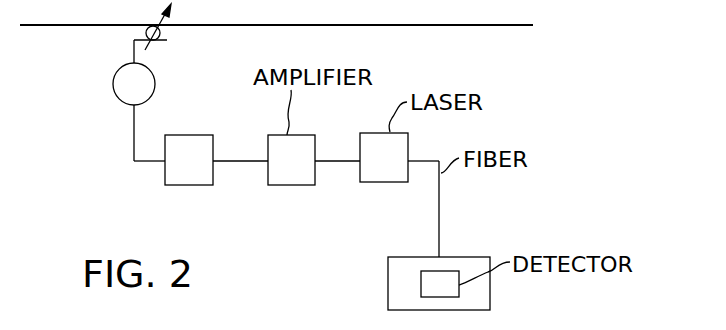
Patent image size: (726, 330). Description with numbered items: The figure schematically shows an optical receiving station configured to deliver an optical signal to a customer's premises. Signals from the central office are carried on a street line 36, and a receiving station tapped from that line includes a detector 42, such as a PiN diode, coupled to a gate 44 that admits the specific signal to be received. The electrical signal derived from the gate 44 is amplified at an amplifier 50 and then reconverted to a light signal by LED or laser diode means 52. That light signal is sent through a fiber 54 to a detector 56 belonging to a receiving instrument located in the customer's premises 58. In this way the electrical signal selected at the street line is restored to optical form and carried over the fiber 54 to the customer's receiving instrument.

The street line 36 is at (352, 24).
The detector 42 is at (114, 78).
The gate 44 is at (189, 160).
The amplifier 50 is at (291, 160).
The LED or laser diode means 52 is at (384, 157).
The fiber 54 is at (440, 188).
The detector 56 is at (421, 283).
The customer's premises 58 is at (480, 257).